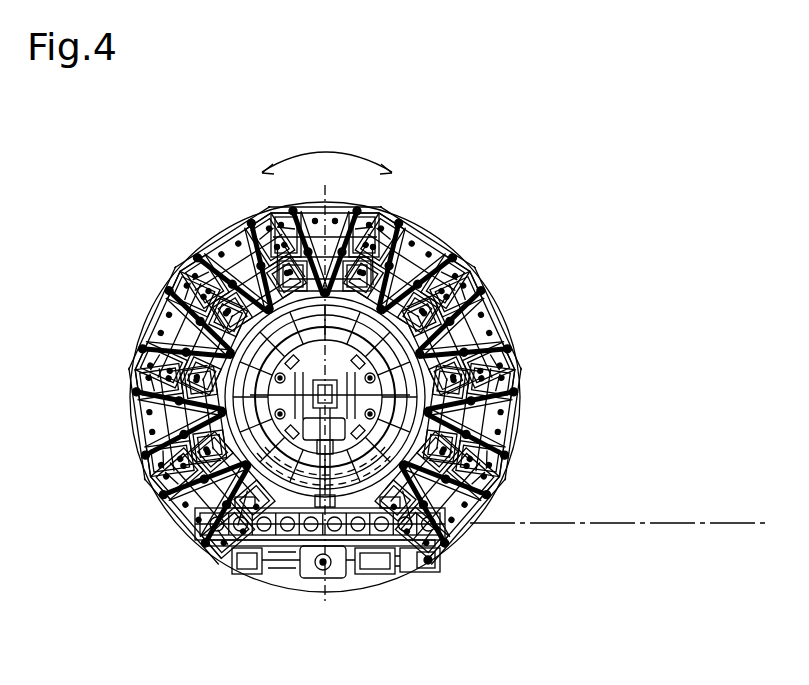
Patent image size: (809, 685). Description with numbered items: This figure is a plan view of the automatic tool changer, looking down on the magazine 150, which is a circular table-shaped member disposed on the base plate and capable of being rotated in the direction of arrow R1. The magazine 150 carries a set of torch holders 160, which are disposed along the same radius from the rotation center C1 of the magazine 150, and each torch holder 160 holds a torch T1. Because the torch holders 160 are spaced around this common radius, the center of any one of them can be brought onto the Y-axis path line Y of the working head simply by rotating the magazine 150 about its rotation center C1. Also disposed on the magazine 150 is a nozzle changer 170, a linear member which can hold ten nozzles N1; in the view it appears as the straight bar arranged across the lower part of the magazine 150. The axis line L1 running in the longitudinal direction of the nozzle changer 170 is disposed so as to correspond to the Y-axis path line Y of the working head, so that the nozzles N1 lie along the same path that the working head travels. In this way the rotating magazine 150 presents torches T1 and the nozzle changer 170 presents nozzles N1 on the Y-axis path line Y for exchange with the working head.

The magazine 150 is at (331, 390).
The torch holder 160 is at (452, 266).
The nozzle changer 170 is at (440, 562).
The torch T1 is at (488, 318).
The rotation center of the magazine C1 is at (146, 427).
The axis line of the nozzle changer L1 is at (227, 540).
The nozzle N1 is at (353, 543).
The arrow indicating rotation direction of the magazine R1 is at (327, 150).
The Y-axis path line of the working head Y is at (565, 523).